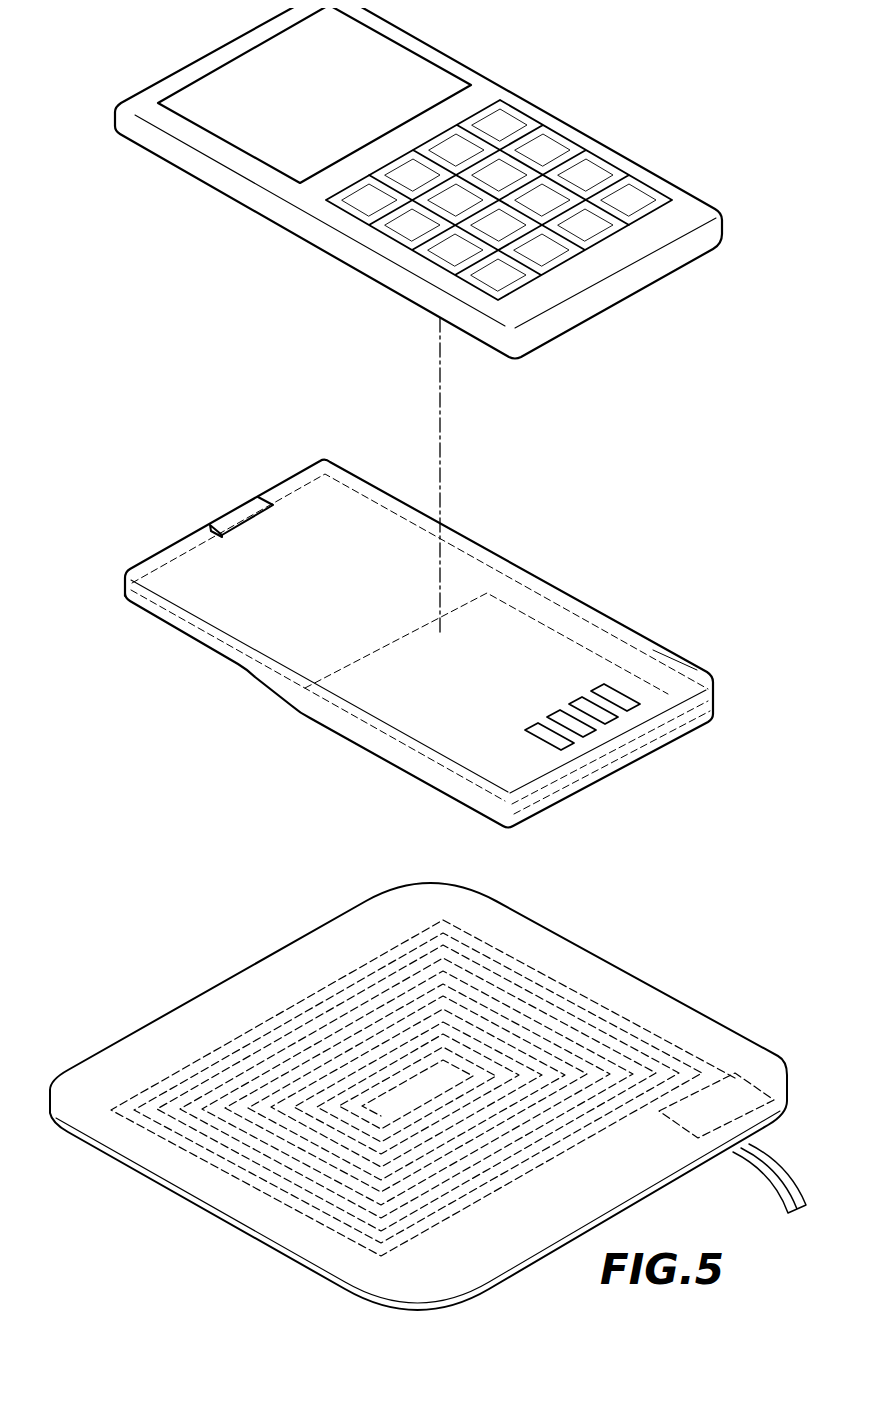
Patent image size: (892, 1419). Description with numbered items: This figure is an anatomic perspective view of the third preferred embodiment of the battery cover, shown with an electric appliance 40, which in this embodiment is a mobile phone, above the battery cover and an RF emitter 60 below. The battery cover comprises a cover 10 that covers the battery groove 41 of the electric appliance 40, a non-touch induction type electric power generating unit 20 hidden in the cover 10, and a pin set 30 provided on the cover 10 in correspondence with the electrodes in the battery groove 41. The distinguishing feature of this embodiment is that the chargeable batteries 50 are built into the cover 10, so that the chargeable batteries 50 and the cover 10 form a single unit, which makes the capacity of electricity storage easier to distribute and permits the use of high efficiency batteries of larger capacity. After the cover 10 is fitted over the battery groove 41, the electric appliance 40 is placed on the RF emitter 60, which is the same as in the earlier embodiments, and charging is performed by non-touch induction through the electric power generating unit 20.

The cover 10 is at (631, 632).
The non-touch induction type electric power generating unit 20 is at (540, 615).
The pin set 30 is at (629, 702).
The electric appliance 40 is at (630, 157).
The battery groove 41 is at (385, 284).
The chargeable batteries 50 is at (447, 539).
The RF emitter 60 is at (624, 970).